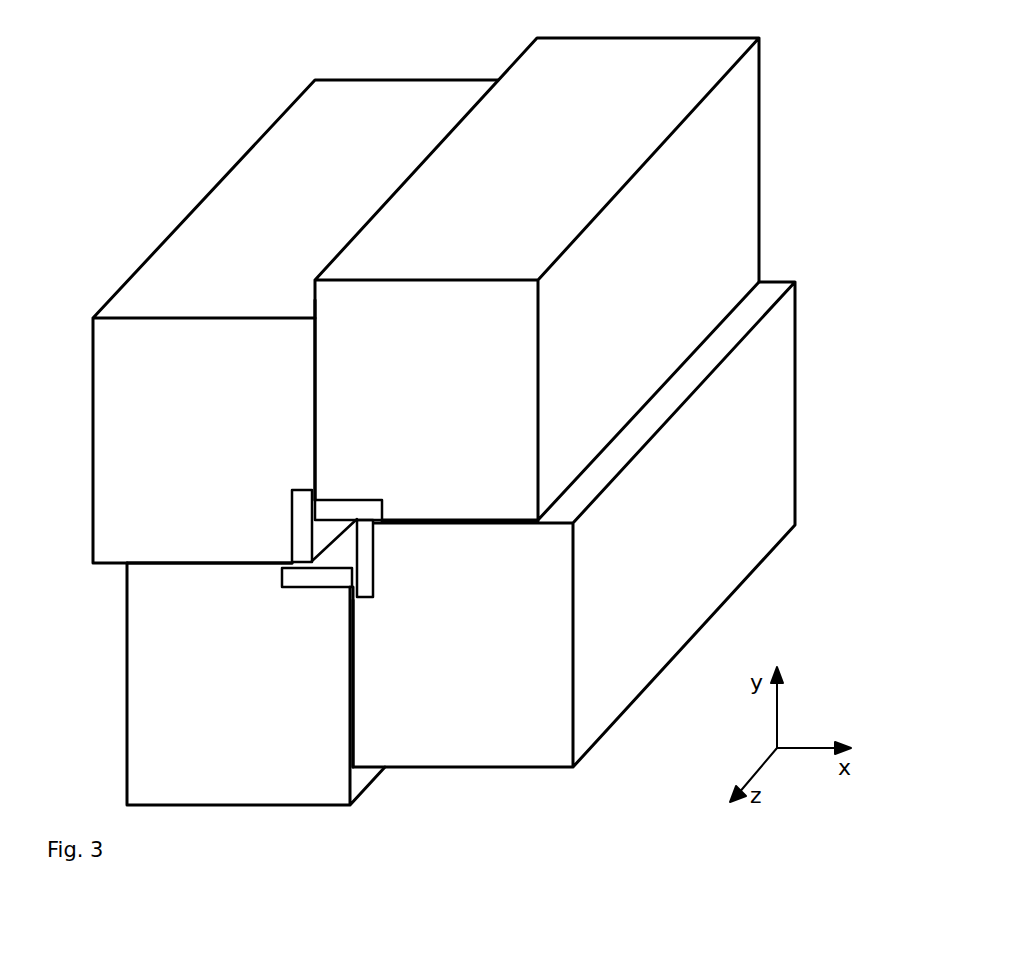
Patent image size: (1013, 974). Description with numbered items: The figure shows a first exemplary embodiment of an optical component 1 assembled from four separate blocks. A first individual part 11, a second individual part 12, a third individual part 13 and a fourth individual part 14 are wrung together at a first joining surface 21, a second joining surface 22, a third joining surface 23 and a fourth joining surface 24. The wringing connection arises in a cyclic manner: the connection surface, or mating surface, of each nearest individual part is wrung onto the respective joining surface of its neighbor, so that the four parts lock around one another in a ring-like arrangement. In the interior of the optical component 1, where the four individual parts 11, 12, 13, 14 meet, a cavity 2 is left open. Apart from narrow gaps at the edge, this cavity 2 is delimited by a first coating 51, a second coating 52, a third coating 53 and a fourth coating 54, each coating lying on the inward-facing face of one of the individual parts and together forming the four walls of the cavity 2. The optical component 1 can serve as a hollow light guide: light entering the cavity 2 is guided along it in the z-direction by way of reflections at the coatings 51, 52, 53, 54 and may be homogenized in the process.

The optical component 1 is at (820, 53).
The cavity 2 is at (338, 552).
The first individual part 11 is at (322, 793).
The second individual part 12 is at (278, 138).
The third individual part 13 is at (745, 165).
The fourth individual part 14 is at (720, 585).
The first joining surface 21 is at (232, 565).
The second joining surface 22 is at (313, 360).
The third joining surface 23 is at (420, 520).
The fourth joining surface 24 is at (352, 662).
The first coating 51 is at (328, 575).
The second coating 52 is at (298, 517).
The third coating 53 is at (360, 508).
The fourth coating 54 is at (368, 560).